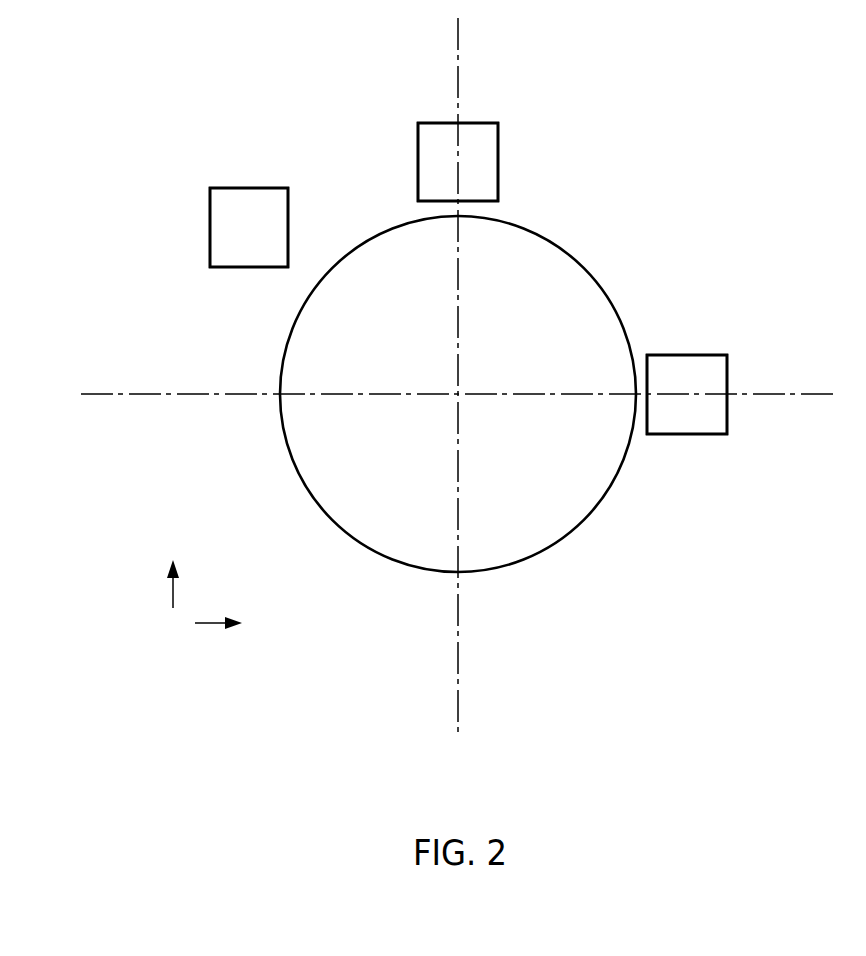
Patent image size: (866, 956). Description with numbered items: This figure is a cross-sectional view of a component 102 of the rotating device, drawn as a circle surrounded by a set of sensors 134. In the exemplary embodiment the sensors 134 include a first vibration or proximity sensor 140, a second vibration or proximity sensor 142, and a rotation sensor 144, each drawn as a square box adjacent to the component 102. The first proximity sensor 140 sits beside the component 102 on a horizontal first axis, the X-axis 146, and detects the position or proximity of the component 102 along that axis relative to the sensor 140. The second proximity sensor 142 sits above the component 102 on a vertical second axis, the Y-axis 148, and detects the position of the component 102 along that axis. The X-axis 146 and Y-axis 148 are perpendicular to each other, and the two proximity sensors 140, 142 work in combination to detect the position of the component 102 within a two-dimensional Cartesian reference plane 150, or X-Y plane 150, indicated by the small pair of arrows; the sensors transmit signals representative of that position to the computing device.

The component 102 is at (322, 510).
The sensors 134 is at (418, 162).
The first vibration or proximity sensor 140 is at (685, 355).
The second vibration or proximity sensor 142 is at (498, 162).
The rotation sensor 144 is at (248, 187).
The X-axis 146 is at (762, 395).
The Y-axis 148 is at (458, 77).
The two-dimensional Cartesian reference plane 150 is at (199, 597).